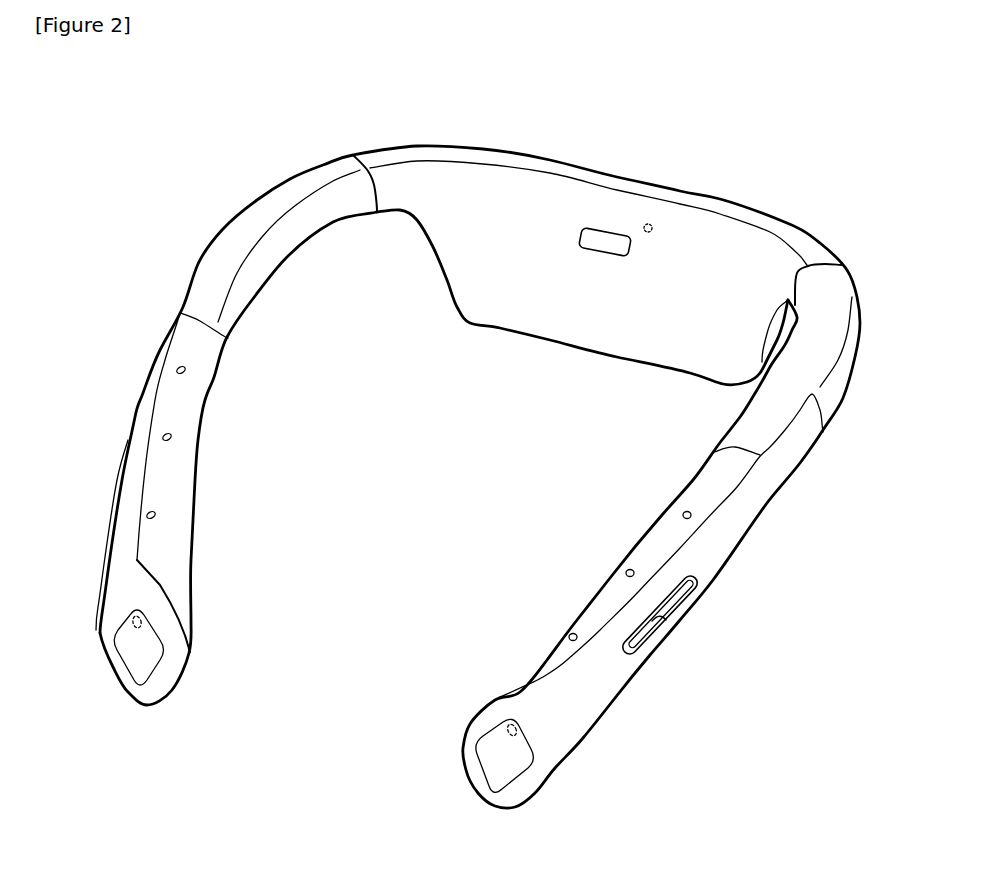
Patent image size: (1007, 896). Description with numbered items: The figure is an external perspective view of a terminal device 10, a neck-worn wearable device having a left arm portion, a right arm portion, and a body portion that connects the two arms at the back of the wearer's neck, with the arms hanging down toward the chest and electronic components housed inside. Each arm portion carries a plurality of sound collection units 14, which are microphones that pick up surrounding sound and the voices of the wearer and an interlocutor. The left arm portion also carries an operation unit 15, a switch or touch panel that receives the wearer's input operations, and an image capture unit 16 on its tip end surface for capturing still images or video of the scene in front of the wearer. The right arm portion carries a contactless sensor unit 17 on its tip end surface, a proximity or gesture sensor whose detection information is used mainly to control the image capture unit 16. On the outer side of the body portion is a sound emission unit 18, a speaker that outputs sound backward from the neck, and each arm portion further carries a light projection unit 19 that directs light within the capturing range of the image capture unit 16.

The terminal device 10 is at (784, 176).
The sound collection unit 14 is at (186, 369).
The operation unit 15 is at (648, 627).
The image capture unit 16 is at (513, 770).
The sensor unit 17 is at (137, 653).
The sound emission unit 18 is at (655, 218).
The light projection unit 19 is at (134, 614).